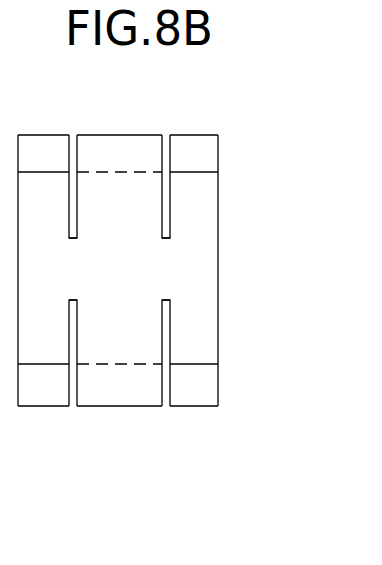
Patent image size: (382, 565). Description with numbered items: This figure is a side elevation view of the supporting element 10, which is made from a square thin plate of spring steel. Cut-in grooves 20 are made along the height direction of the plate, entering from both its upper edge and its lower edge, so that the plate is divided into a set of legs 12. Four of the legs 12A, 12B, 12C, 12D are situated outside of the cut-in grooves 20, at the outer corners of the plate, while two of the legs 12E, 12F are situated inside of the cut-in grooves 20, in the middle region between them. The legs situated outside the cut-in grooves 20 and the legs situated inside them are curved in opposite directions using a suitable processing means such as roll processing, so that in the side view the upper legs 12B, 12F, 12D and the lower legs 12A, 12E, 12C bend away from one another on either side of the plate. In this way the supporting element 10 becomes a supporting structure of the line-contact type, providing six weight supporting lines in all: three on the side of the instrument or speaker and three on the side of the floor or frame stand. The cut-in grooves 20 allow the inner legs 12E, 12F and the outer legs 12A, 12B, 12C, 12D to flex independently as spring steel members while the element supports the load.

The supporting element 10 is at (236, 297).
The legs 12 is at (203, 230).
The leg 12A is at (40, 382).
The leg 12B is at (57, 152).
The leg 12C is at (193, 383).
The leg 12D is at (203, 153).
The leg 12E is at (112, 382).
The leg 12F is at (137, 153).
The cut-in grooves 20 is at (162, 216).